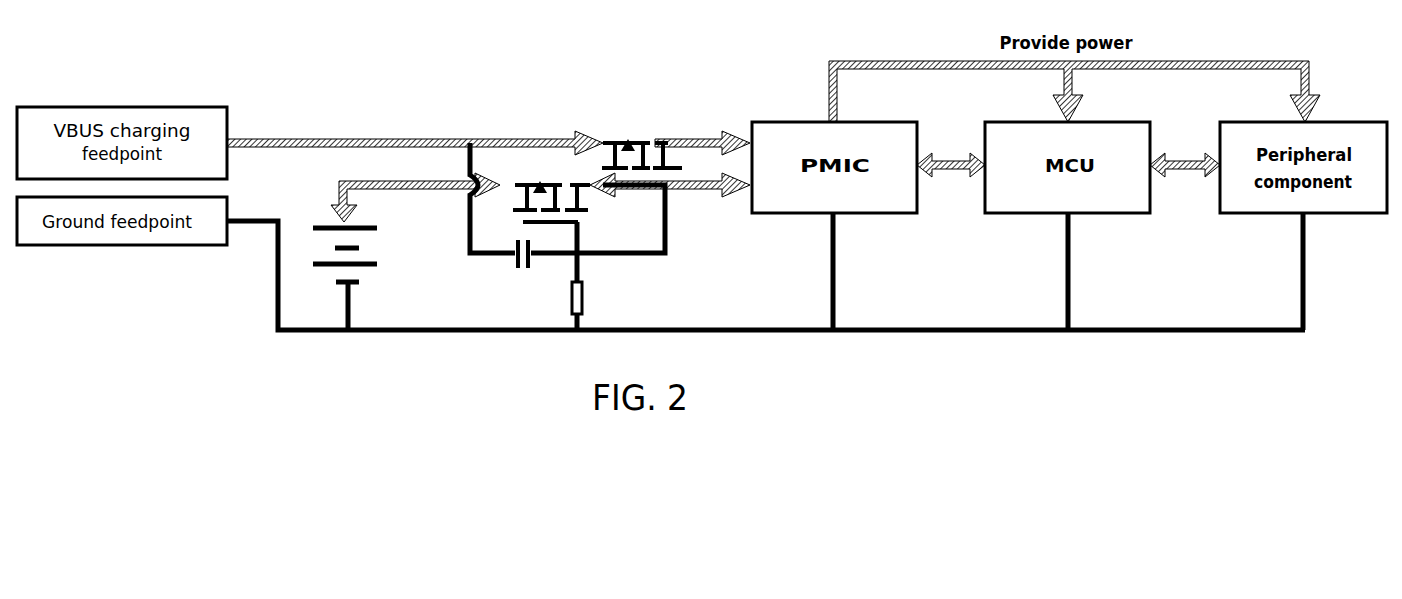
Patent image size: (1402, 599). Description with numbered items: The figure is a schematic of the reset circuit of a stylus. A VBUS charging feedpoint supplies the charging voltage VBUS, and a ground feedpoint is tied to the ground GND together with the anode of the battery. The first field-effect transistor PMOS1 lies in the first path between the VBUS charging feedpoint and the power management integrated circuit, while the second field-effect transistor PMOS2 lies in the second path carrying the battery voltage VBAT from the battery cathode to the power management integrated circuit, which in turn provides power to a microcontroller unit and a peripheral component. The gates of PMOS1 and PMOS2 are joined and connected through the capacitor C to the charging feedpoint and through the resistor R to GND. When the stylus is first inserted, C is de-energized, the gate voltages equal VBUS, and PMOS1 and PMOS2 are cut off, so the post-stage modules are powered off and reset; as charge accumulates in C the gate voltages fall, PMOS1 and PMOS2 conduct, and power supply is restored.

The first field-effect transistor PMOS1 is at (642, 148).
The second field-effect transistor PMOS2 is at (551, 190).
The capacitor C is at (520, 266).
The resistor R is at (562, 276).
The ground GND is at (766, 292).
The VBUS charging voltage VBUS is at (415, 133).
The battery voltage VBAT is at (415, 197).